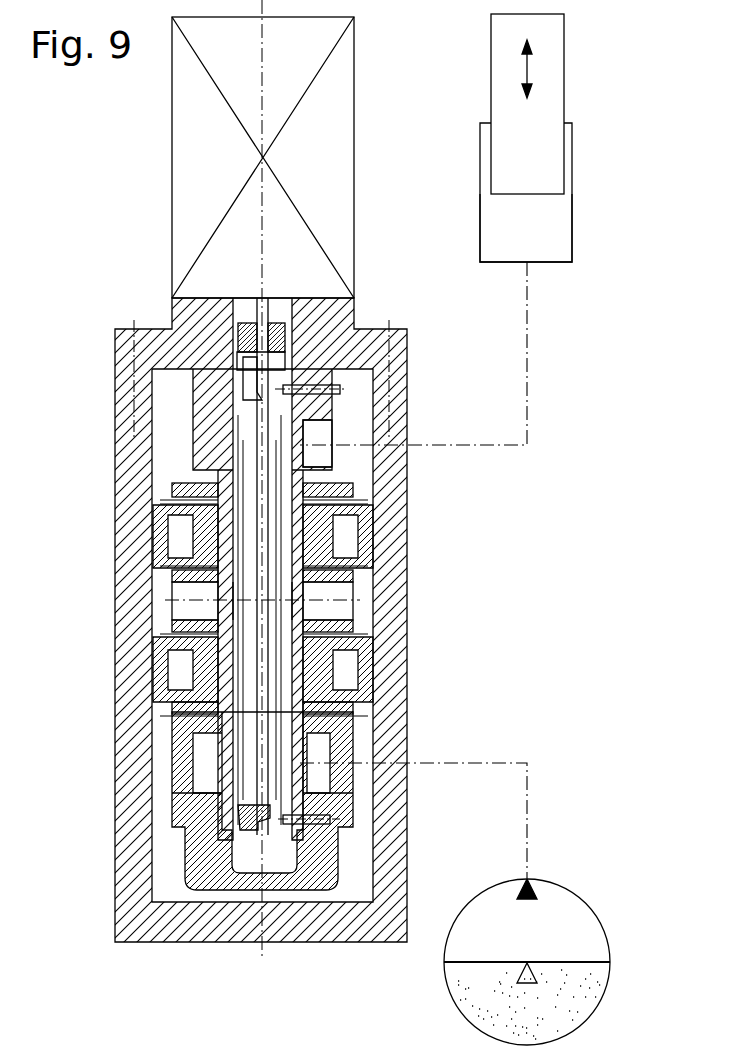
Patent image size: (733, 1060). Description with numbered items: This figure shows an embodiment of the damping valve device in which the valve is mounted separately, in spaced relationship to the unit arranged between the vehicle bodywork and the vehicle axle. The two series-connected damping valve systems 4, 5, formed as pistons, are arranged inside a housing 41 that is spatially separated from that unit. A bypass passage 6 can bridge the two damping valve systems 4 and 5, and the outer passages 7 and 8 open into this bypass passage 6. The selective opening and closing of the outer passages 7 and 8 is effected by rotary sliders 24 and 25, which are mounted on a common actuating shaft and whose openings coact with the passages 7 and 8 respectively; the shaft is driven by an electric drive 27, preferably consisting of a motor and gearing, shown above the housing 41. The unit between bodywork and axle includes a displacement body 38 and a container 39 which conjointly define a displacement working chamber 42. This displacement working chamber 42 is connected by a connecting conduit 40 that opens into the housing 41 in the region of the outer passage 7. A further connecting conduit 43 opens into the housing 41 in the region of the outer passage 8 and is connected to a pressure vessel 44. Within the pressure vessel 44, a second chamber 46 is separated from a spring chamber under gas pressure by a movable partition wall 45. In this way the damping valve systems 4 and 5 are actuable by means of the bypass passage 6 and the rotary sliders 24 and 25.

The electric drive 27 is at (325, 160).
The housing 41 is at (387, 548).
The outer passage 7 is at (330, 432).
The connecting conduit 40 is at (527, 388).
The rotary slider 24 is at (240, 410).
The damping valve system 4 is at (365, 530).
The bypass passage 6 is at (278, 607).
The damping valve system 5 is at (325, 666).
The outer passage 8 is at (297, 753).
The rotary slider 25 is at (232, 803).
The displacement body 38 is at (547, 52).
The container 39 is at (572, 195).
The displacement working chamber 42 is at (531, 235).
The connecting conduit 43 is at (493, 763).
The second chamber 46 is at (550, 908).
The movable partition wall 45 is at (570, 963).
The pressure vessel 44 is at (550, 1003).